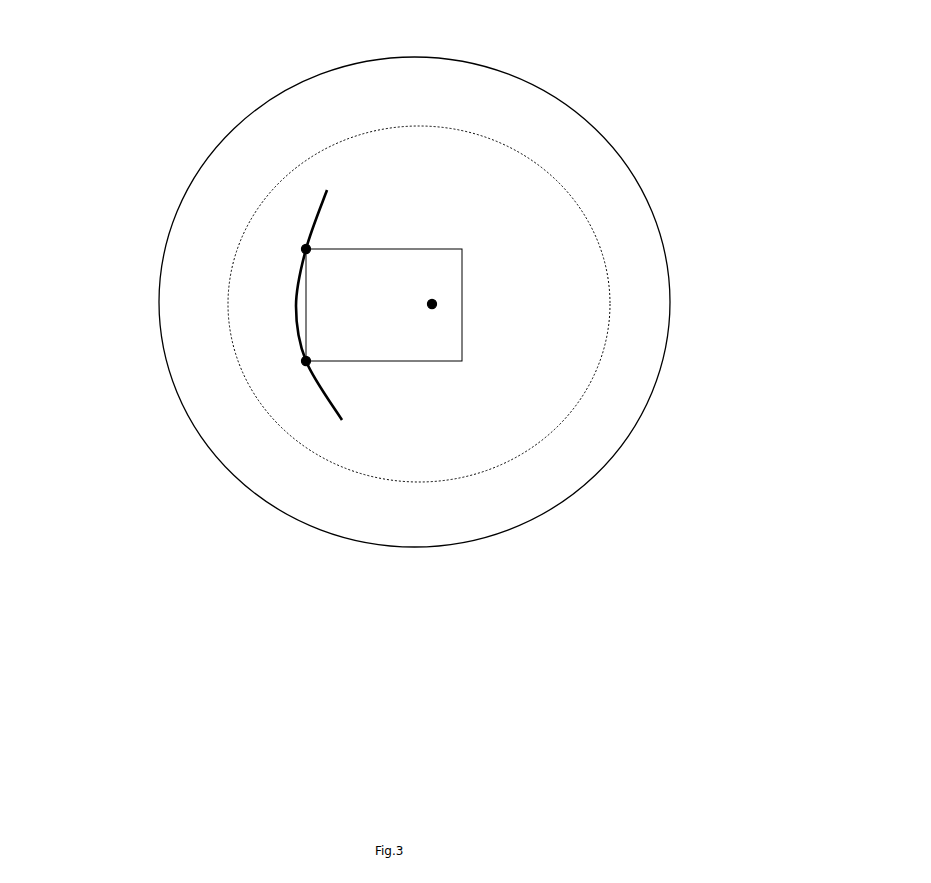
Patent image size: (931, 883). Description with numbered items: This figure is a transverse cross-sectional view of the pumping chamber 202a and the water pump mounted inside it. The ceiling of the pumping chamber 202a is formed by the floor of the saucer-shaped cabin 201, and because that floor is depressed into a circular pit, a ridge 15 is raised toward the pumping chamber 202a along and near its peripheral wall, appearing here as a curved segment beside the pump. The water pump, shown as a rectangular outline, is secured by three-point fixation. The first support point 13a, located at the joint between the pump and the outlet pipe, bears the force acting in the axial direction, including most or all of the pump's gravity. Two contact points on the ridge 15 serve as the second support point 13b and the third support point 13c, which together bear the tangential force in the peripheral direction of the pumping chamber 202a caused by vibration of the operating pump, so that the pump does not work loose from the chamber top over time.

The first support point 13a is at (520, 169).
The second support point 13b is at (188, 165).
The third support point 13c is at (187, 444).
The ridge 15 is at (201, 305).
The saucer-shaped cabin 201 is at (460, 302).
The pumping chamber 202a is at (487, 331).